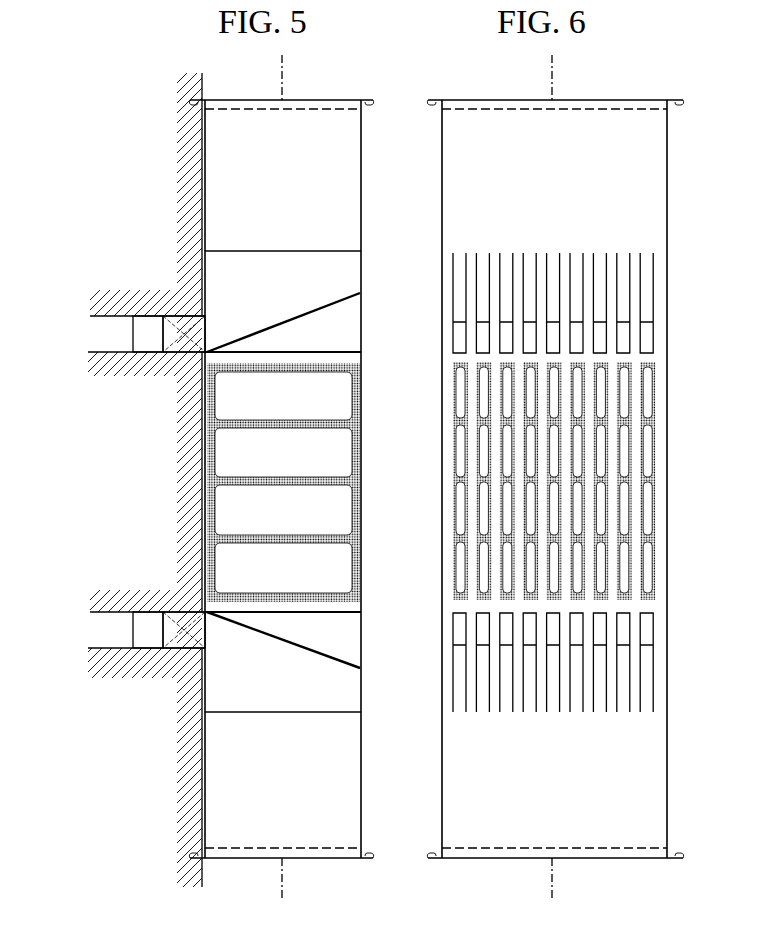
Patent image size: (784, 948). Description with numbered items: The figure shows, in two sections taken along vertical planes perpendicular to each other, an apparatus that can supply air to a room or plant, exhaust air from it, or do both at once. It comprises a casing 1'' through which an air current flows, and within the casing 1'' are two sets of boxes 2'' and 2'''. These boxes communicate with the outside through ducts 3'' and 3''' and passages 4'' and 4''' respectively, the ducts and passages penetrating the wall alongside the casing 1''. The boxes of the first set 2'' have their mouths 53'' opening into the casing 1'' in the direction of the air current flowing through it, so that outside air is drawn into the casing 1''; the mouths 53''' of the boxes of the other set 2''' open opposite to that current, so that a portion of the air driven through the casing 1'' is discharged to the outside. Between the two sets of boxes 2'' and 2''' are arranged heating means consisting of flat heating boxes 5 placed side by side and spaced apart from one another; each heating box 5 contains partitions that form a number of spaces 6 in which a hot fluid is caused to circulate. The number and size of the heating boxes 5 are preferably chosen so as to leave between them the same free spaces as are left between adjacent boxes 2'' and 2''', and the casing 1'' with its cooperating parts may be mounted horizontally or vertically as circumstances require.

In FIG. 5, the casing 1'' is at (281, 479).
In FIG. 6, the casing 1'' is at (555, 479).
In FIG. 5, the first set of boxes 2'' is at (283, 313).
In FIG. 6, the first set of boxes 2'' is at (578, 303).
In FIG. 5, the second set of boxes 2''' is at (283, 645).
In FIG. 6, the second set of boxes 2''' is at (575, 662).
In FIG. 5, the duct 3'' is at (167, 365).
In FIG. 5, the duct 3''' is at (169, 659).
In FIG. 5, the passage 4'' is at (134, 334).
In FIG. 5, the passage 4''' is at (133, 630).
In FIG. 5, the heating box 5 is at (358, 413).
In FIG. 6, the heating box 5 is at (450, 413).
In FIG. 5, the space 6 is at (223, 453).
In FIG. 6, the space 6 is at (460, 447).
In FIG. 6, the mouth 53'' is at (553, 236).
In FIG. 6, the mouth 53''' is at (553, 727).